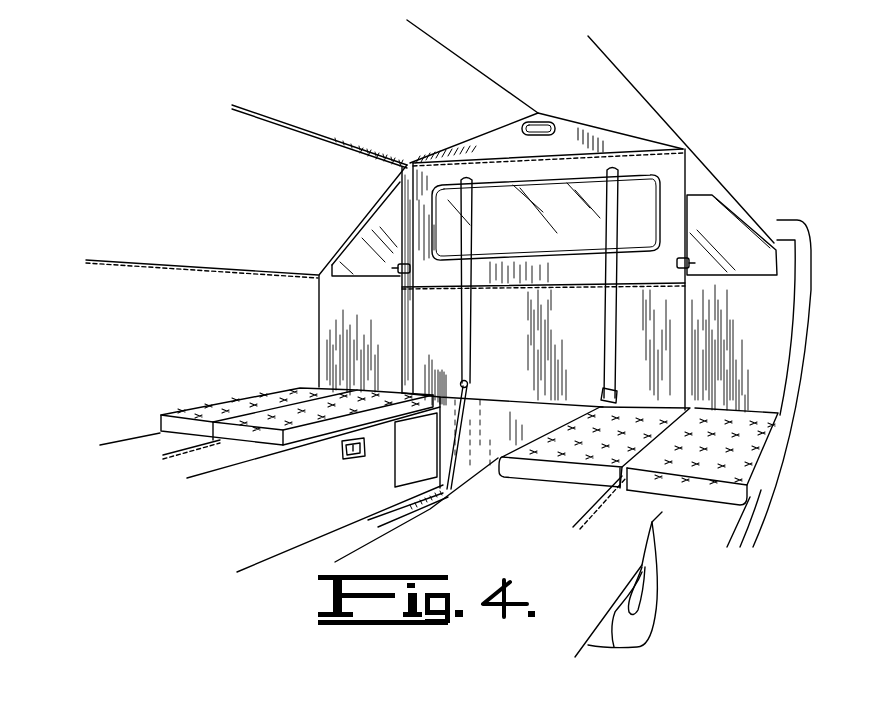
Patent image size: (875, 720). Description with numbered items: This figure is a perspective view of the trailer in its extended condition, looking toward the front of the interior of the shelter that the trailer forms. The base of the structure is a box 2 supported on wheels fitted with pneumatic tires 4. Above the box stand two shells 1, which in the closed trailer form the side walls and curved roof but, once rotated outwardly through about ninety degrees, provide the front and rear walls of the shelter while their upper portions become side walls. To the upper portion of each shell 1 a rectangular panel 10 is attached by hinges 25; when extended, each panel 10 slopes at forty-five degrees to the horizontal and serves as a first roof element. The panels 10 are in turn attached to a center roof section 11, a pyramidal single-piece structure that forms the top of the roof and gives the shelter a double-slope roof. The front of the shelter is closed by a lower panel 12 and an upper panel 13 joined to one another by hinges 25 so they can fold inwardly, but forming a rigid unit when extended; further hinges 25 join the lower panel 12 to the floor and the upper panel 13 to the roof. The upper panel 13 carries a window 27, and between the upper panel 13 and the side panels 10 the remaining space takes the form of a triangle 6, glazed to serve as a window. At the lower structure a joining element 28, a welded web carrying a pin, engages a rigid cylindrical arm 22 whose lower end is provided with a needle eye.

The shell 1 is at (137, 283).
The box 2 is at (615, 567).
The pneumatic tire 4 is at (648, 603).
The triangle 6 is at (367, 248).
The panel 10 is at (287, 138).
The center roof section 11 is at (439, 108).
The lower panel 12 is at (417, 351).
The upper panel 13 is at (413, 219).
The rigid cylindrical arm 22 is at (460, 438).
The hinge 25 is at (363, 148).
The window 27 is at (467, 359).
The joining element 28 is at (468, 385).